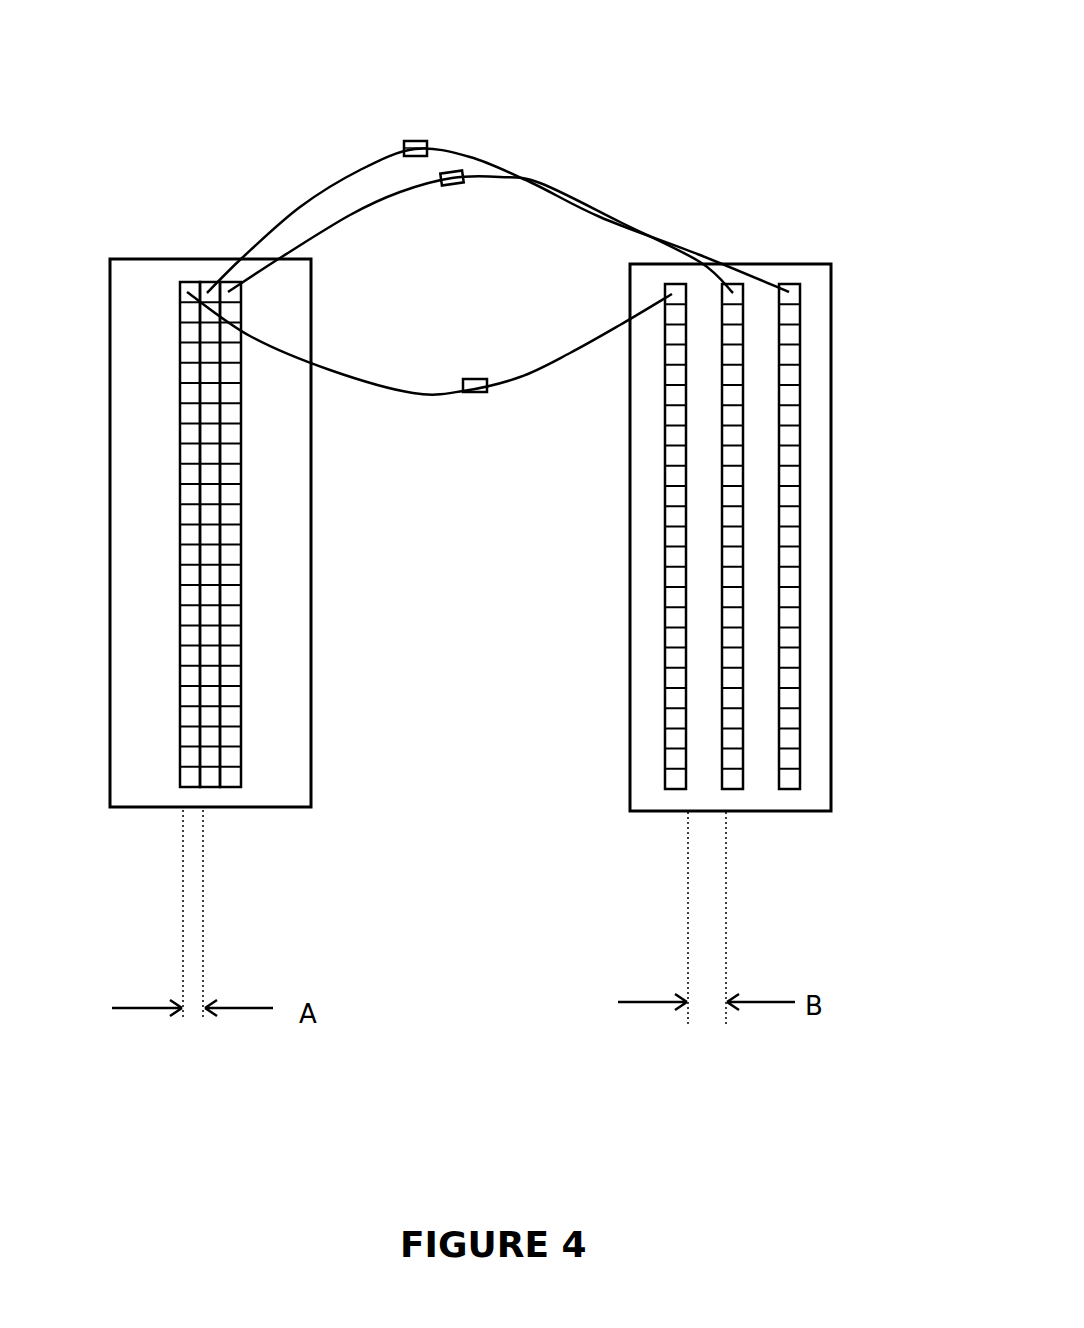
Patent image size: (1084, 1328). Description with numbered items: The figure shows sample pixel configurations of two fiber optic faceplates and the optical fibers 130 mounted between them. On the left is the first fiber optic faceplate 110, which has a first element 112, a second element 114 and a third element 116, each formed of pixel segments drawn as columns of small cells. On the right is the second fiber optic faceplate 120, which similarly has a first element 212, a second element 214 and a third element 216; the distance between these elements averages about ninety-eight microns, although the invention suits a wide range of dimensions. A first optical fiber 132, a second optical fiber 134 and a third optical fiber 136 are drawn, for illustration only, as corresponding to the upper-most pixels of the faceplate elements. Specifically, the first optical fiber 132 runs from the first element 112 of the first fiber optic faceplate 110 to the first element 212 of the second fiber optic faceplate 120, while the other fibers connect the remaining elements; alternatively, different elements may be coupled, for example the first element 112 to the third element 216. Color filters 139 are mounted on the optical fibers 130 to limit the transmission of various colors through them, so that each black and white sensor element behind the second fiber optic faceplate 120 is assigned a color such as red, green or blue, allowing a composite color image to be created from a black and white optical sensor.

The first fiber optic faceplate 110 is at (130, 258).
The first element 112 is at (190, 800).
The second element 114 is at (211, 800).
The third element 116 is at (232, 800).
The second fiber optic faceplate 120 is at (805, 262).
The optical fibers 130 is at (560, 101).
The first optical fiber 132 is at (429, 343).
The second optical fiber 134 is at (480, 234).
The third optical fiber 136 is at (625, 231).
The color filters 139 is at (419, 141).
The first element 212 is at (676, 802).
The second element 214 is at (734, 802).
The third element 216 is at (790, 802).